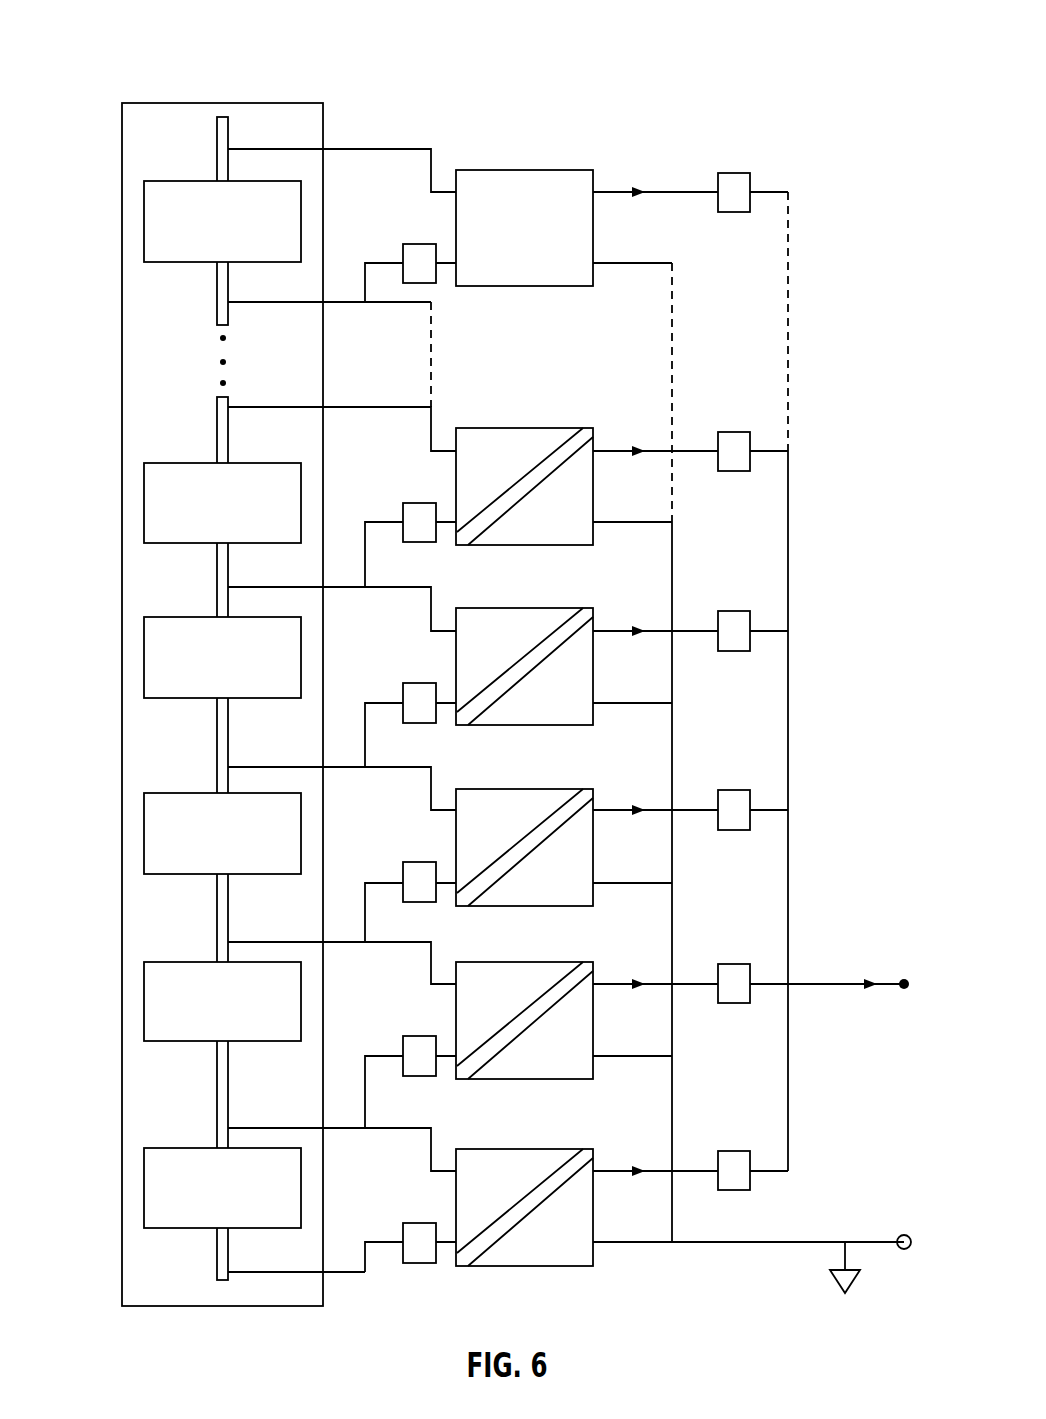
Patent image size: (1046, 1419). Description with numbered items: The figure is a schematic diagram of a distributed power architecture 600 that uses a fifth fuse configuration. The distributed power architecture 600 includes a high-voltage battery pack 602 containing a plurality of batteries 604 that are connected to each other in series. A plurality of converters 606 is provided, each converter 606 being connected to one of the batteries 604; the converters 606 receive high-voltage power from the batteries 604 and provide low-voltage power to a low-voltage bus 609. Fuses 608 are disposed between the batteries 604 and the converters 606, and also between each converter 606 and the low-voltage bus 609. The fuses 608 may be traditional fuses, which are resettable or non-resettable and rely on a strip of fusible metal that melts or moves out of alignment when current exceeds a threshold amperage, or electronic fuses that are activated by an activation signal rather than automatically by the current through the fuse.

The distributed power architecture 600 is at (148, 45).
The high-voltage battery pack 602 is at (292, 85).
The batteries 604 is at (199, 232).
The converters 606 is at (547, 241).
The fuses 608 is at (423, 238).
The low-voltage bus 609 is at (906, 970).